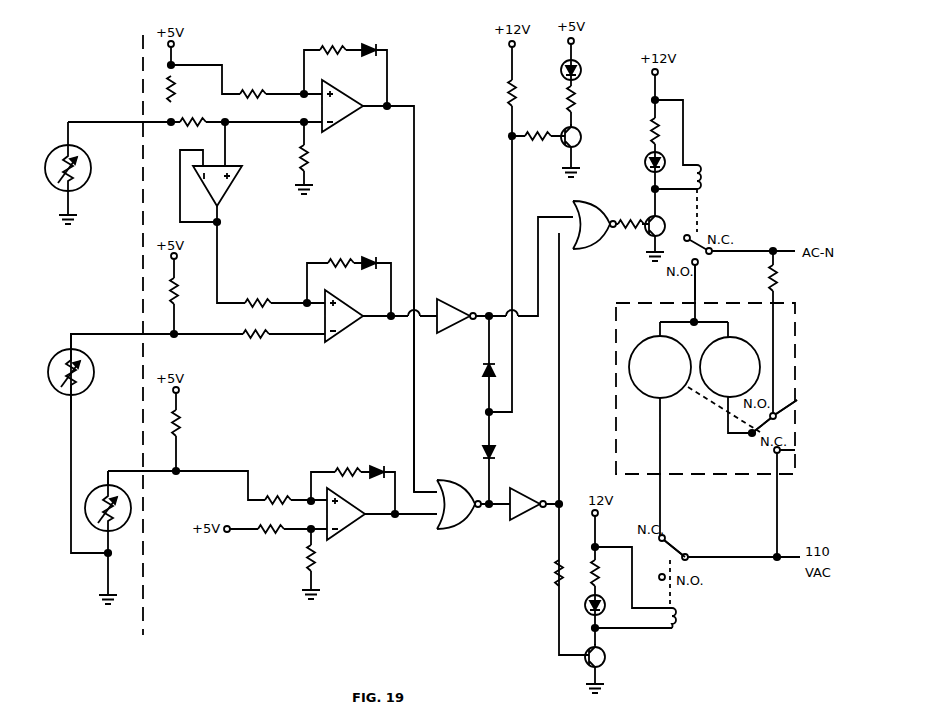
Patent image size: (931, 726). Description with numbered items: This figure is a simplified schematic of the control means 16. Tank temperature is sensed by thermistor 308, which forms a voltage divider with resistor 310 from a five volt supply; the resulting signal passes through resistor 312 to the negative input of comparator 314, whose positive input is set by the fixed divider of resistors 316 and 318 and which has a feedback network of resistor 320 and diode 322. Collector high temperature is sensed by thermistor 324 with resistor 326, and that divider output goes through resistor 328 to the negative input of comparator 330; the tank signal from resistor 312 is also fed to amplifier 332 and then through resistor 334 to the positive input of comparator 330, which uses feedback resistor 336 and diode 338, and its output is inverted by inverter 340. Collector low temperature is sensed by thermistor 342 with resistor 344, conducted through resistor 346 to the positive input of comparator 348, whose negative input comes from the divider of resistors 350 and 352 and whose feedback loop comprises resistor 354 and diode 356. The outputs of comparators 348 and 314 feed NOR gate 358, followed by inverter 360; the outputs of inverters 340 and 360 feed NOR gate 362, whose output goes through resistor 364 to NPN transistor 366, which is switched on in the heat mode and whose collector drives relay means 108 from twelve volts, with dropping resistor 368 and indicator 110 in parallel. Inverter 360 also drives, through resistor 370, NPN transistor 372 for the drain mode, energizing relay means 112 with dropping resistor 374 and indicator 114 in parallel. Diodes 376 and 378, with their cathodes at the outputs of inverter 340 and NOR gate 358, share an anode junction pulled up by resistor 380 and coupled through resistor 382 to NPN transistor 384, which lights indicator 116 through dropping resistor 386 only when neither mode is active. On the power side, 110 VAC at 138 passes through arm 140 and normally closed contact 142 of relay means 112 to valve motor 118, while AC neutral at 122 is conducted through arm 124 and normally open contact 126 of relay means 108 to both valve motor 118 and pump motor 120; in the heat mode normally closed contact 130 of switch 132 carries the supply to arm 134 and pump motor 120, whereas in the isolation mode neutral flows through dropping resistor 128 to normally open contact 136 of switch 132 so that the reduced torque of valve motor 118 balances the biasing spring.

The control means 16 is at (415, 550).
The relay means 108 is at (698, 166).
The indicator 110 is at (645, 162).
The relay means 112 is at (679, 620).
The indicator 114 is at (585, 604).
The indicator 116 is at (580, 70).
The valve motor 118 is at (676, 392).
The pump motor 120 is at (758, 345).
The AC neutral 122 is at (775, 248).
The arm 124 is at (712, 258).
The normally open contact 126 is at (698, 274).
The dropping resistor 128 is at (778, 276).
The normally closed contact 130 is at (801, 448).
The switch 132 is at (765, 453).
The arm 134 is at (750, 440).
The normally open contact 136 is at (802, 398).
The 110 VAC 138 is at (788, 560).
The arm 140 is at (692, 554).
The normally closed contact 142 is at (678, 538).
The thermistor 308 is at (86, 155).
The resistor 310 is at (175, 90).
The resistor 312 is at (195, 118).
The comparator 314 is at (343, 122).
The resistor 316 is at (270, 90).
The resistor 318 is at (312, 158).
The resistor 320 is at (348, 44).
The diode 322 is at (364, 44).
The thermistor 324 is at (82, 388).
The resistor 326 is at (178, 294).
The resistor 328 is at (266, 338).
The comparator 330 is at (340, 336).
The amplifier 332 is at (230, 198).
The resistor 334 is at (248, 300).
The resistor 336 is at (340, 258).
The diode 338 is at (368, 256).
The inverter 340 is at (468, 306).
The thermistor 342 is at (90, 488).
The resistor 344 is at (181, 428).
The resistor 346 is at (288, 494).
The comparator 348 is at (348, 536).
The resistor 350 is at (280, 534).
The resistor 352 is at (308, 560).
The resistor 354 is at (346, 468).
The diode 356 is at (378, 466).
The NOR gate 358 is at (450, 530).
The inverter 360 is at (516, 522).
The NOR gate 362 is at (559, 233).
The resistor 364 is at (628, 232).
The NPN transistor 366 is at (648, 216).
The dropping resistor 368 is at (652, 124).
The resistor 370 is at (555, 574).
The NPN transistor 372 is at (590, 668).
The dropping resistor 374 is at (598, 560).
The diode 376 is at (483, 372).
The diode 378 is at (483, 450).
The resistor 380 is at (507, 96).
The resistor 382 is at (554, 130).
The NPN transistor 384 is at (566, 146).
The dropping resistor 386 is at (577, 100).